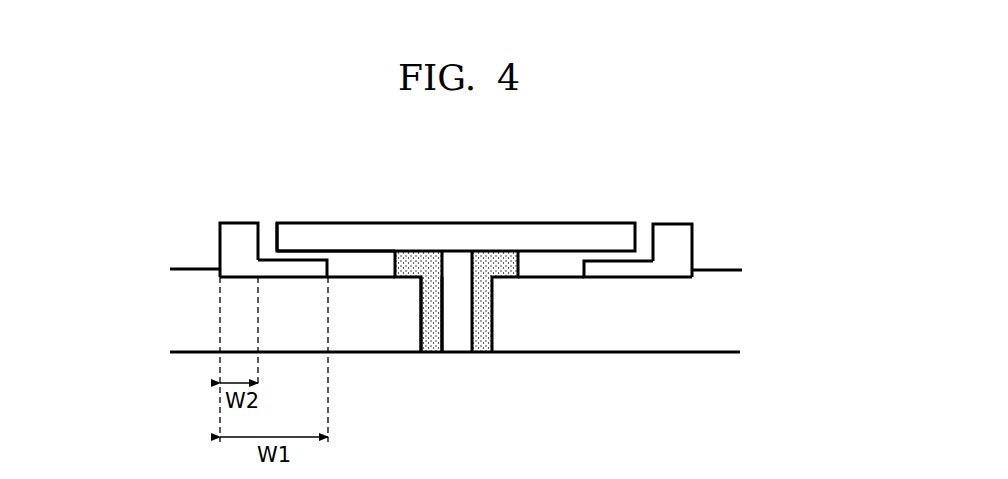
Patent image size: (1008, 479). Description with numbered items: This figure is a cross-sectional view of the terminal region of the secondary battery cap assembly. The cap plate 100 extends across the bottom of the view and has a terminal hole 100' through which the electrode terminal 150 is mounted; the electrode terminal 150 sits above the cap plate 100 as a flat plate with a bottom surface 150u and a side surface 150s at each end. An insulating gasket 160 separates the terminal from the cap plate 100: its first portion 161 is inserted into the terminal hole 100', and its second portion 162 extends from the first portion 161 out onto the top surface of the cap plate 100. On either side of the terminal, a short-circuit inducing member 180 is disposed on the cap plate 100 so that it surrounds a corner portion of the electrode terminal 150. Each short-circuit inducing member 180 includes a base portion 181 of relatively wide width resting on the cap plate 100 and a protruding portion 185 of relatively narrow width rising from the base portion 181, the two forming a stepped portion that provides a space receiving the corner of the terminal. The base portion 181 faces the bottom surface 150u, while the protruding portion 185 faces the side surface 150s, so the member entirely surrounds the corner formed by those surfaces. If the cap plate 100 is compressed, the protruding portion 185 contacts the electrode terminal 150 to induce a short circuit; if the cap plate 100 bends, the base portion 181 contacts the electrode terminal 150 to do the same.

The cap plate 100 is at (456, 350).
The terminal hole 100' is at (411, 347).
The electrode terminal 150 is at (463, 233).
The side surface 150s is at (276, 237).
The bottom surface 150u is at (355, 252).
The insulating gasket 160 is at (495, 353).
The first portion 161 is at (488, 320).
The second portion 162 is at (513, 268).
The short-circuit inducing member 180 is at (457, 256).
The base portion 181 is at (302, 272).
The protruding portion 185 is at (237, 227).